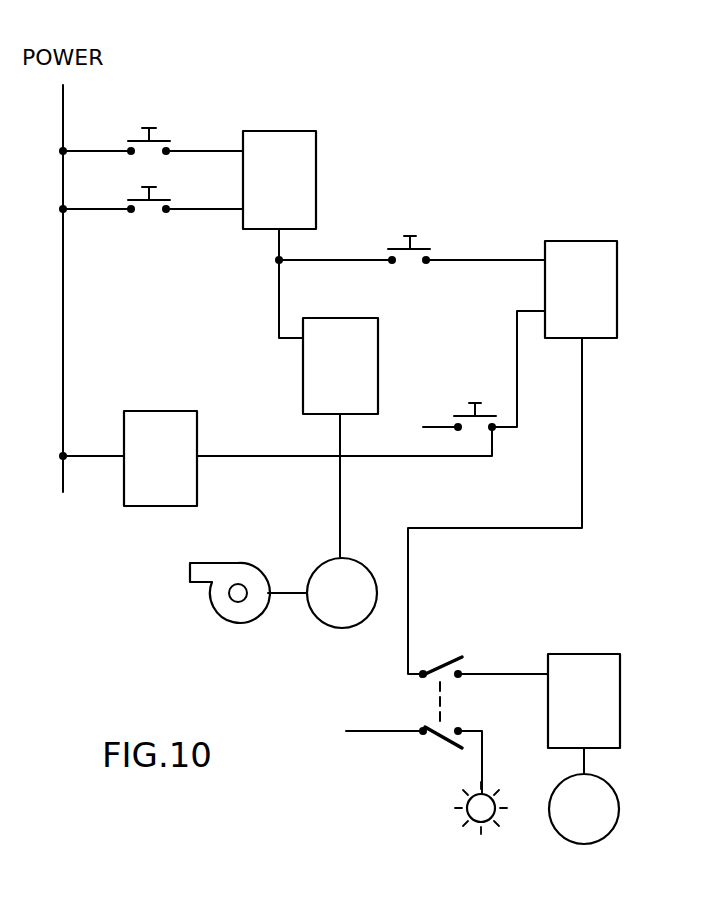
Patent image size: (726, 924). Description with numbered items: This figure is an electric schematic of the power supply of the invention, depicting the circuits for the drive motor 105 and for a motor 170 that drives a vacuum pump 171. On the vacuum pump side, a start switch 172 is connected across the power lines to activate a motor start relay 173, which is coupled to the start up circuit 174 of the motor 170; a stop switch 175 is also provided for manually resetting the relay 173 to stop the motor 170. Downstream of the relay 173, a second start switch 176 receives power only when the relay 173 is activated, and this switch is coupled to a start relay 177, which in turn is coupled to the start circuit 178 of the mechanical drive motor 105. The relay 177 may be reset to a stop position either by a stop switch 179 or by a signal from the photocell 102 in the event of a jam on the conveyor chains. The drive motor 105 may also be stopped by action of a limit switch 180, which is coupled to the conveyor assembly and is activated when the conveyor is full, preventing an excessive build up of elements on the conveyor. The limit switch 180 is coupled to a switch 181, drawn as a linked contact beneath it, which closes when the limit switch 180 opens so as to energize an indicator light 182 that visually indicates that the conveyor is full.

The photocell 102 is at (152, 506).
The drive motor 105 is at (619, 805).
The motor 170 is at (342, 628).
The vacuum pump 171 is at (230, 622).
The start switch 172 is at (170, 140).
The motor start relay 173 is at (300, 131).
The start up circuit 174 is at (378, 345).
The stop switch 175 is at (170, 199).
The second start switch 176 is at (423, 247).
The start relay 177 is at (600, 241).
The start circuit 178 is at (620, 677).
The stop switch 179 is at (487, 410).
The limit switch 180 is at (450, 657).
The switch 181 is at (430, 740).
The indicator light 182 is at (462, 812).